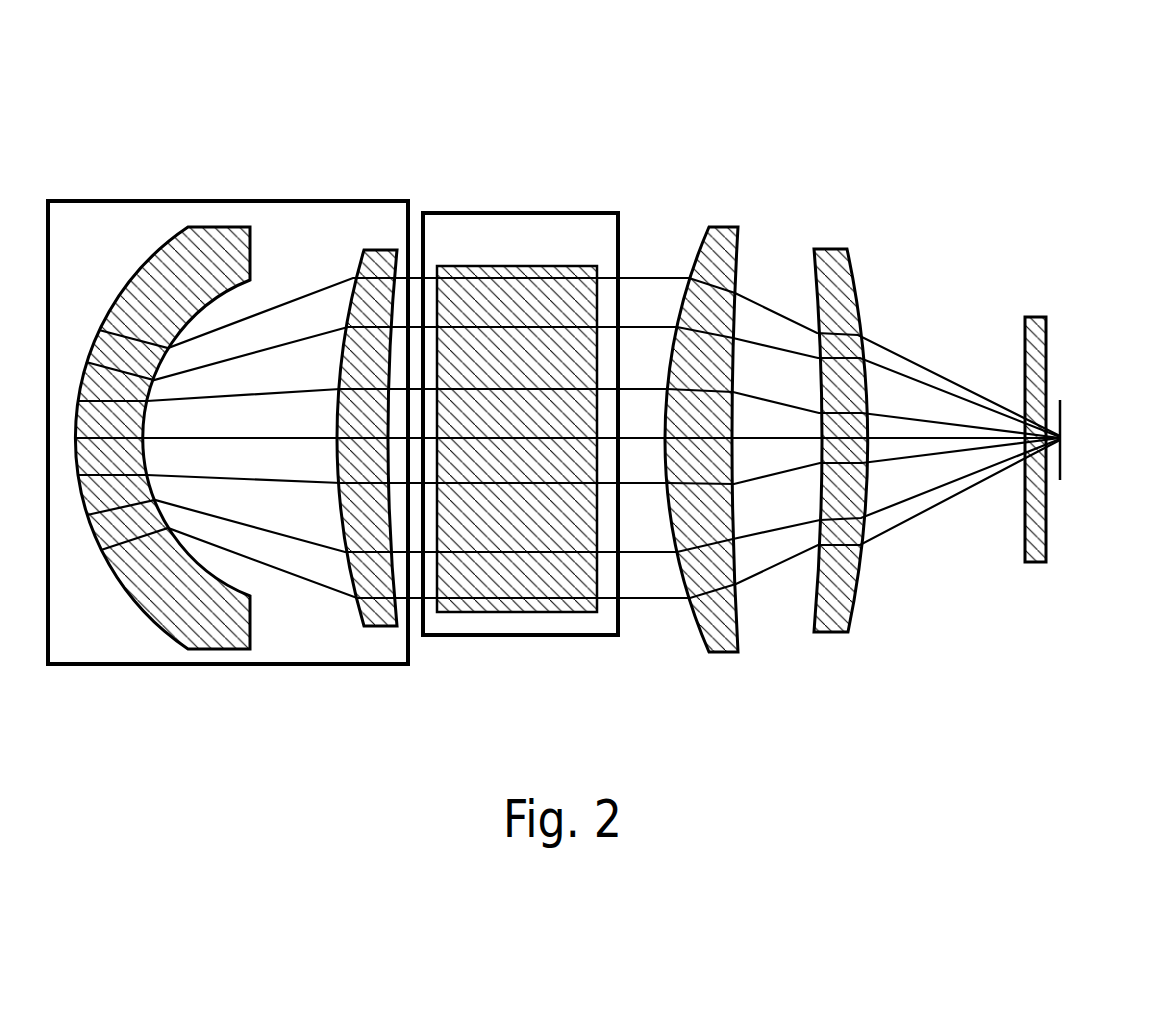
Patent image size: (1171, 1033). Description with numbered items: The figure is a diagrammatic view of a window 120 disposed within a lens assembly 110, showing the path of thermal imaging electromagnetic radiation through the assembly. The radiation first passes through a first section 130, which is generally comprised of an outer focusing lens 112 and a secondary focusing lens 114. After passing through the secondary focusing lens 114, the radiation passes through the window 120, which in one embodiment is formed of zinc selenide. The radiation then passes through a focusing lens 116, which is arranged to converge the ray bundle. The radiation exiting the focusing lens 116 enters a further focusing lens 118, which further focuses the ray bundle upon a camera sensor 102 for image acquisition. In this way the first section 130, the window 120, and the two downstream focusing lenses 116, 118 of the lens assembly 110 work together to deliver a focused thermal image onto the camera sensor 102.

The camera sensor 102 is at (1037, 317).
The lens assembly 110 is at (897, 106).
The outer focusing lens 112 is at (137, 270).
The secondary focusing lens 114 is at (372, 630).
The focusing lens 116 is at (715, 652).
The focusing lens 118 is at (837, 248).
The window 120 is at (535, 265).
The first section 130 is at (229, 201).